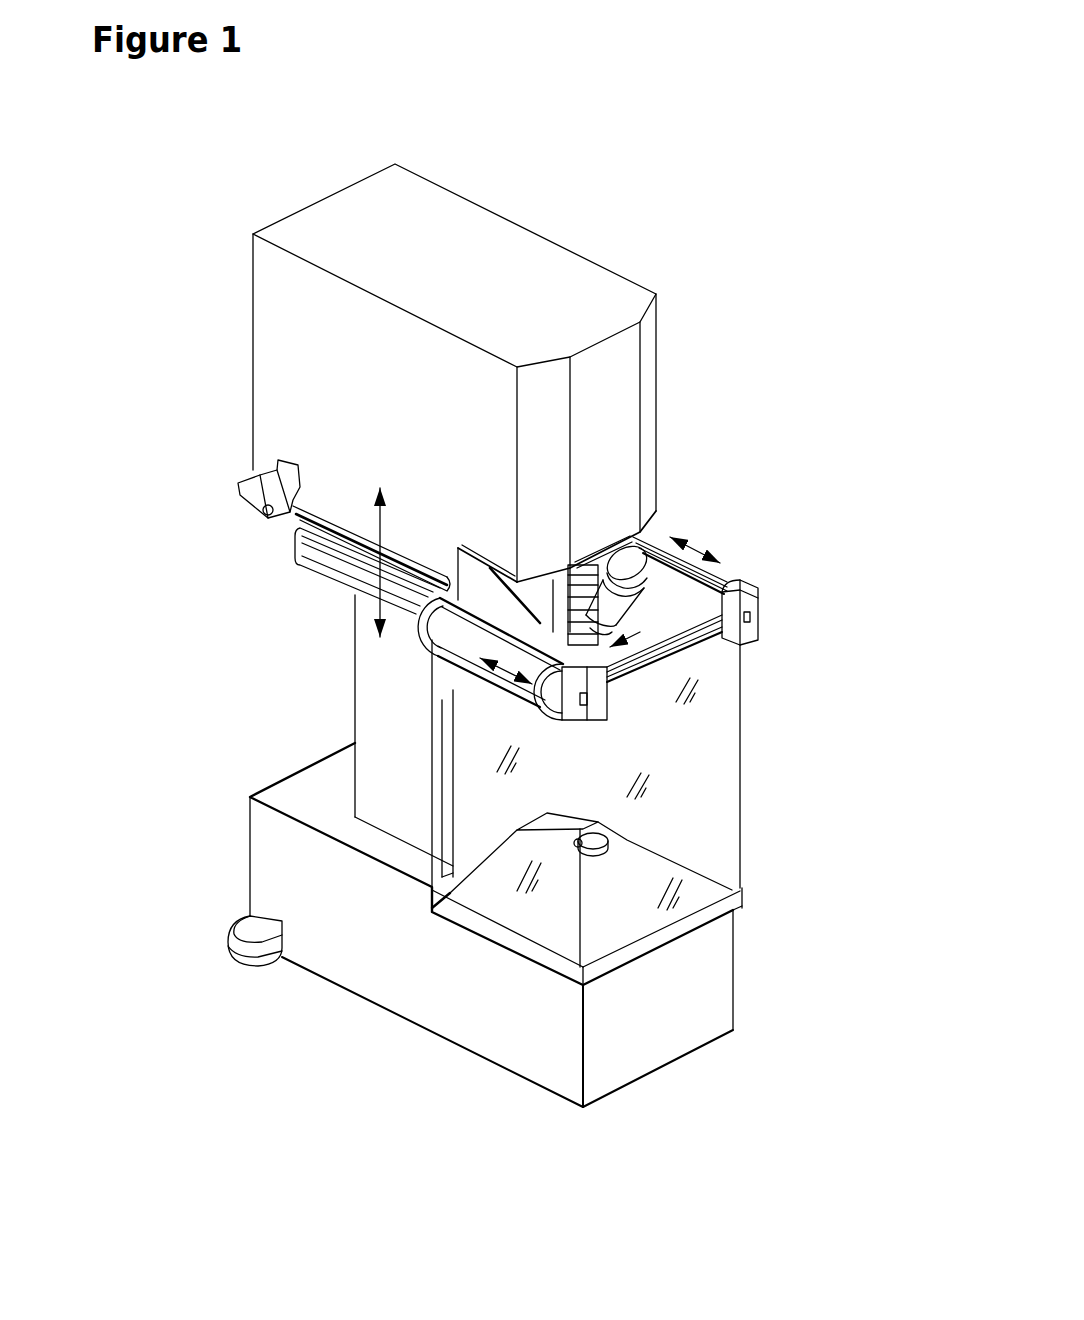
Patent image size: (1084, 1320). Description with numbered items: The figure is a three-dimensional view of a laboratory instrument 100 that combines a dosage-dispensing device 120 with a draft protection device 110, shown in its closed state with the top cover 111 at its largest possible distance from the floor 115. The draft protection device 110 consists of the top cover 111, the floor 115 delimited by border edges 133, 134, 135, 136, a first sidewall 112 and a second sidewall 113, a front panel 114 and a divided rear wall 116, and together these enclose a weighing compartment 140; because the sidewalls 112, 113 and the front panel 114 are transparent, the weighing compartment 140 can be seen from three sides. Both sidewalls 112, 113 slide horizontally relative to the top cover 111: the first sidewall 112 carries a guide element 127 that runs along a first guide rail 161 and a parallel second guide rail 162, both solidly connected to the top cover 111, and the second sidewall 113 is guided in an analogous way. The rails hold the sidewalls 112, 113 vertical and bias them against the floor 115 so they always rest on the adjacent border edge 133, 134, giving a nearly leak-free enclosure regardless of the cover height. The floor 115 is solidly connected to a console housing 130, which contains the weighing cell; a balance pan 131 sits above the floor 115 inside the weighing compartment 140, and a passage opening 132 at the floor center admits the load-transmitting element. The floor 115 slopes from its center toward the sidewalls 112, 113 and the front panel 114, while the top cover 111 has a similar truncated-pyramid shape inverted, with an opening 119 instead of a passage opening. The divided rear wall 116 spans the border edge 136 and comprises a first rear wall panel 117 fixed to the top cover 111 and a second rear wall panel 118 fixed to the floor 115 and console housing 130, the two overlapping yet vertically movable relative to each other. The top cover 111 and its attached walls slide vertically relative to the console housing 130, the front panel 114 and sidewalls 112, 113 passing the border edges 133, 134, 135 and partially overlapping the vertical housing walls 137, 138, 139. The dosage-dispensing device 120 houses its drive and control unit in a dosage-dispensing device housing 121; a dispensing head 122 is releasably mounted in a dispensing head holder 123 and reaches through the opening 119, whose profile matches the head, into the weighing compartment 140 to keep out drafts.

The laboratory instrument 100 is at (618, 178).
The draft protection device 110 is at (778, 607).
The top cover 111 is at (657, 608).
The first sidewall 112 is at (279, 776).
The second sidewall 113 is at (723, 580).
The front panel 114 is at (702, 717).
The floor 115 is at (615, 857).
The divided rear wall 116 is at (284, 820).
The first rear wall panel 117 is at (328, 657).
The second rear wall panel 118 is at (285, 959).
The opening 119 is at (657, 652).
The dosage-dispensing device 120 is at (612, 400).
The dosage-dispensing device housing 121 is at (468, 241).
The dispensing head 122 is at (638, 545).
The dispensing head holder 123 is at (340, 661).
The guide element 127 is at (447, 642).
The console housing 130 is at (308, 792).
The balance pan 131 is at (594, 842).
The passage opening 132 is at (597, 857).
The border edge 133 is at (518, 933).
The border edge 134 is at (695, 870).
The border edge 135 is at (637, 942).
The border edge 136 is at (604, 815).
The housing wall 137 is at (693, 987).
The housing wall 138 is at (540, 1035).
The housing wall 139 is at (733, 958).
The weighing compartment 140 is at (658, 766).
The first guide rail 161 is at (317, 556).
The second guide rail 162 is at (348, 583).